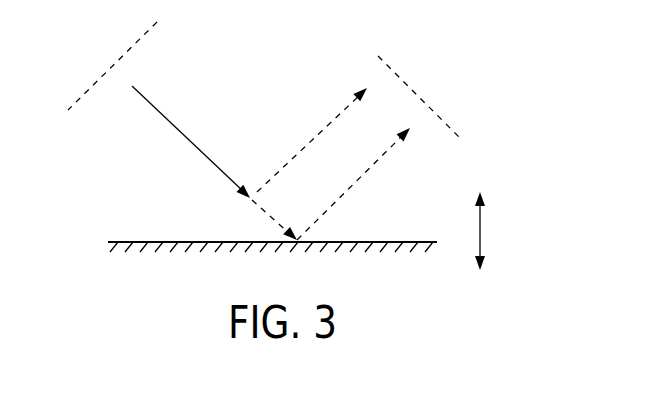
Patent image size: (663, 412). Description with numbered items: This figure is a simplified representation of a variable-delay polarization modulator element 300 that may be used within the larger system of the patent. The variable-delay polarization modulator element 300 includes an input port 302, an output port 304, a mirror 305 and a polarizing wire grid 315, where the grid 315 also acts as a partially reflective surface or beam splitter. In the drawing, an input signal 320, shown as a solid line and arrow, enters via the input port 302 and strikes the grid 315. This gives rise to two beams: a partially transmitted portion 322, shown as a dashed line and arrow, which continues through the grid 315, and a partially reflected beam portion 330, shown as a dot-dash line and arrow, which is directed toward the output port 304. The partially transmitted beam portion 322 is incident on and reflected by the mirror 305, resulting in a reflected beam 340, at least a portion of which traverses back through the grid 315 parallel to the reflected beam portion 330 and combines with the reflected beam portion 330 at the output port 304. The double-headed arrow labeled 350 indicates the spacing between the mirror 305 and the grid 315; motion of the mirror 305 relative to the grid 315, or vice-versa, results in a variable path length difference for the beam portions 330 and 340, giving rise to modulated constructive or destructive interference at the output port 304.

The variable-delay polarization modulator element 300 is at (307, 32).
The input port 302 is at (148, 30).
The output port 304 is at (447, 128).
The mirror 305 is at (122, 245).
The polarizing wire grid 315 is at (120, 197).
The input signal 320 is at (177, 127).
The partially transmitted portion 322 is at (265, 208).
The partially reflected beam portion 330 is at (348, 105).
The reflected beam 340 is at (383, 153).
The separation distance 350 is at (480, 225).